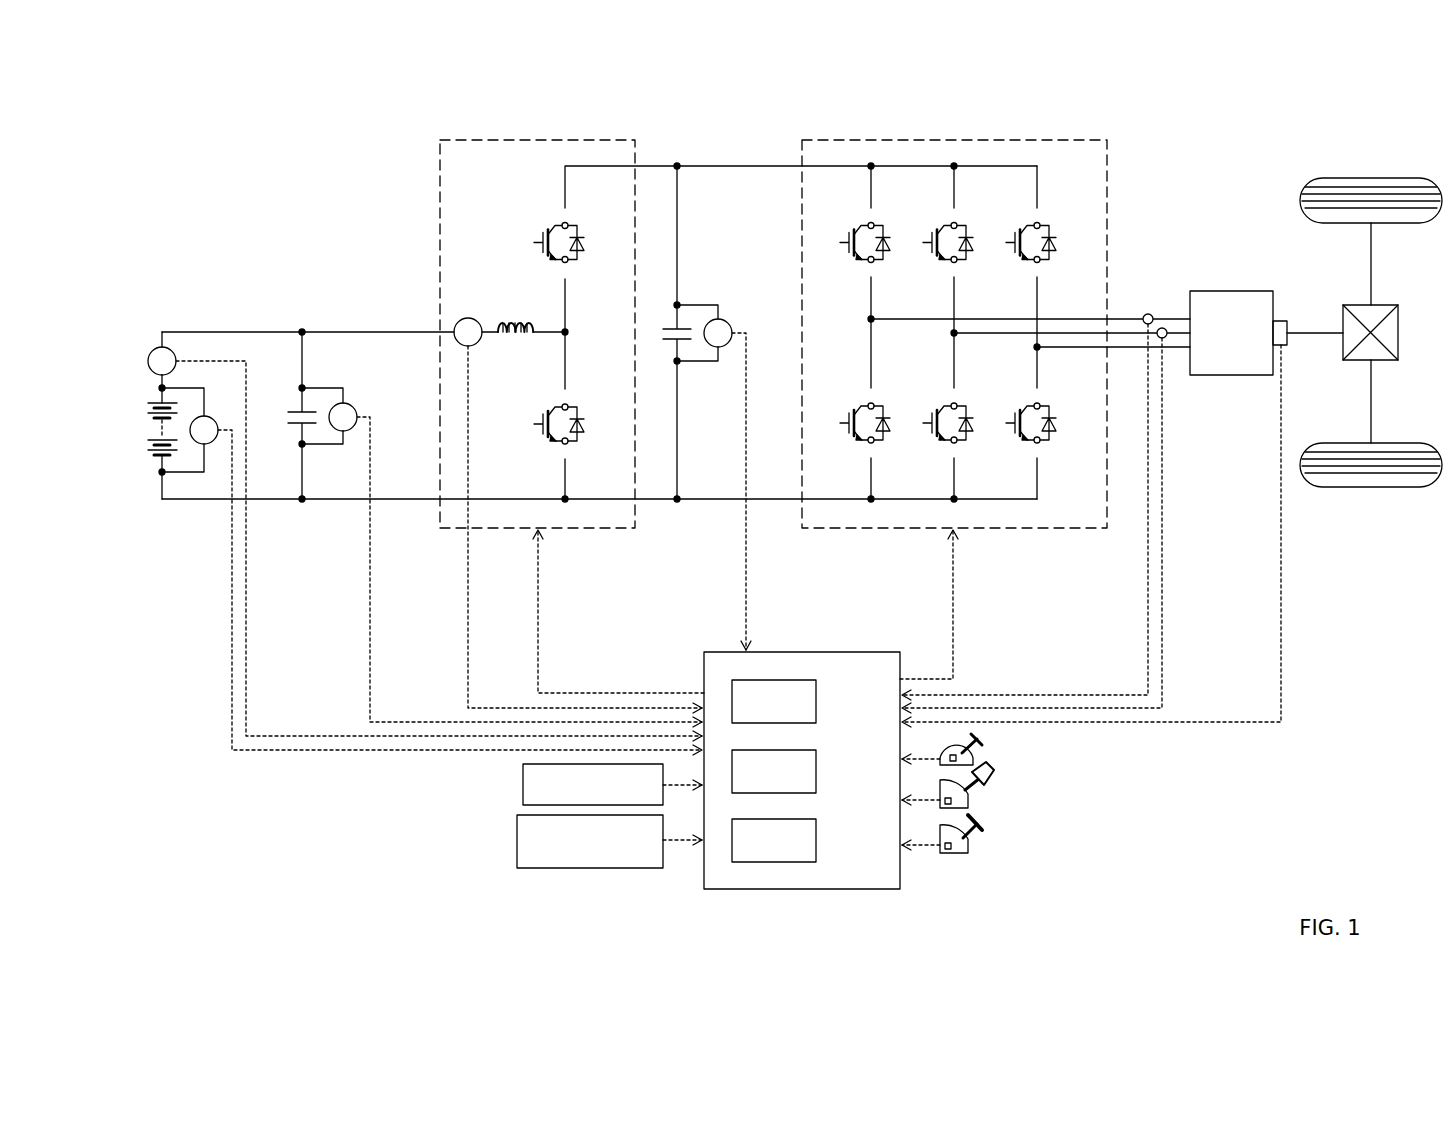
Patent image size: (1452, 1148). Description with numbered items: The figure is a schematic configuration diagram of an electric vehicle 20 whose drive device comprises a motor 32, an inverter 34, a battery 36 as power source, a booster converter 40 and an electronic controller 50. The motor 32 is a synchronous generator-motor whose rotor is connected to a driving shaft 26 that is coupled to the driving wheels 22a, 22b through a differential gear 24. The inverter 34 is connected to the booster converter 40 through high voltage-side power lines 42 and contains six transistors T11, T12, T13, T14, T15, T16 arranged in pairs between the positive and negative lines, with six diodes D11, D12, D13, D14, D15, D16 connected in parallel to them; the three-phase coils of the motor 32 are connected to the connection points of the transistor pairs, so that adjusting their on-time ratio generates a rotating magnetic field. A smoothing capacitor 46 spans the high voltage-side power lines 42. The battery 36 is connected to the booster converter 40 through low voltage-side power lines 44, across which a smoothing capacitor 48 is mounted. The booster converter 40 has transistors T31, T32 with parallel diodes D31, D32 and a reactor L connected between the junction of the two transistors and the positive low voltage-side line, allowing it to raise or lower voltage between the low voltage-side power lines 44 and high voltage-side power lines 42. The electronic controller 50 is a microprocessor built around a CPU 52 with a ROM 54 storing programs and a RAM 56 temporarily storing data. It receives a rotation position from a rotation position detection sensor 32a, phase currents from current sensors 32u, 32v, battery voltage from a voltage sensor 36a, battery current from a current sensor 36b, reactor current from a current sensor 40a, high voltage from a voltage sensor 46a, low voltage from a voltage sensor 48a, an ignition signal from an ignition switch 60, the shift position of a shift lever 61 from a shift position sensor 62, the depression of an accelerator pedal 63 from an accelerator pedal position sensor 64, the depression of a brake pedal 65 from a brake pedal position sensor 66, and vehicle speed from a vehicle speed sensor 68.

The electric vehicle 20 is at (1273, 108).
The driving wheel 22a is at (1372, 178).
The driving wheel 22b is at (1372, 488).
The differential gear 24 is at (1383, 305).
The driving shaft 26 is at (1316, 332).
The motor 32 is at (1233, 291).
The rotation position detection sensor 32a is at (1280, 320).
The current sensor 32u is at (1146, 313).
The current sensor 32v is at (1165, 327).
The inverter 34 is at (952, 140).
The battery 36 is at (158, 460).
The voltage sensor 36a is at (206, 416).
The current sensor 36b is at (160, 345).
The booster converter 40 is at (562, 140).
The current sensor 40a is at (468, 318).
The reactor L is at (517, 320).
The high voltage-side power lines 42 is at (784, 170).
The low voltage-side power lines 44 is at (407, 337).
The smoothing capacitor 46 is at (668, 322).
The voltage sensor 46a is at (722, 318).
The smoothing capacitor 48 is at (293, 405).
The voltage sensor 48a is at (348, 403).
The electronic controller 50 is at (787, 650).
The CPU 52 is at (816, 700).
The ROM 54 is at (816, 772).
The RAM 56 is at (816, 840).
The ignition switch 60 is at (523, 785).
The shift lever 61 is at (984, 738).
The shift position sensor 62 is at (973, 761).
The accelerator pedal 63 is at (990, 783).
The accelerator pedal position sensor 64 is at (968, 803).
The brake pedal 65 is at (980, 831).
The brake pedal position sensor 66 is at (968, 848).
The vehicle speed sensor 68 is at (517, 840).
The transistor T11 is at (852, 239).
The transistor T12 is at (935, 239).
The transistor T13 is at (1018, 239).
The transistor T14 is at (852, 421).
The transistor T15 is at (935, 421).
The transistor T16 is at (1018, 421).
The diode D11 is at (887, 262).
The diode D12 is at (970, 262).
The diode D13 is at (1053, 262).
The diode D14 is at (887, 442).
The diode D15 is at (970, 442).
The diode D16 is at (1053, 442).
The transistor T31 is at (546, 239).
The transistor T32 is at (546, 421).
The diode D31 is at (581, 262).
The diode D32 is at (581, 443).